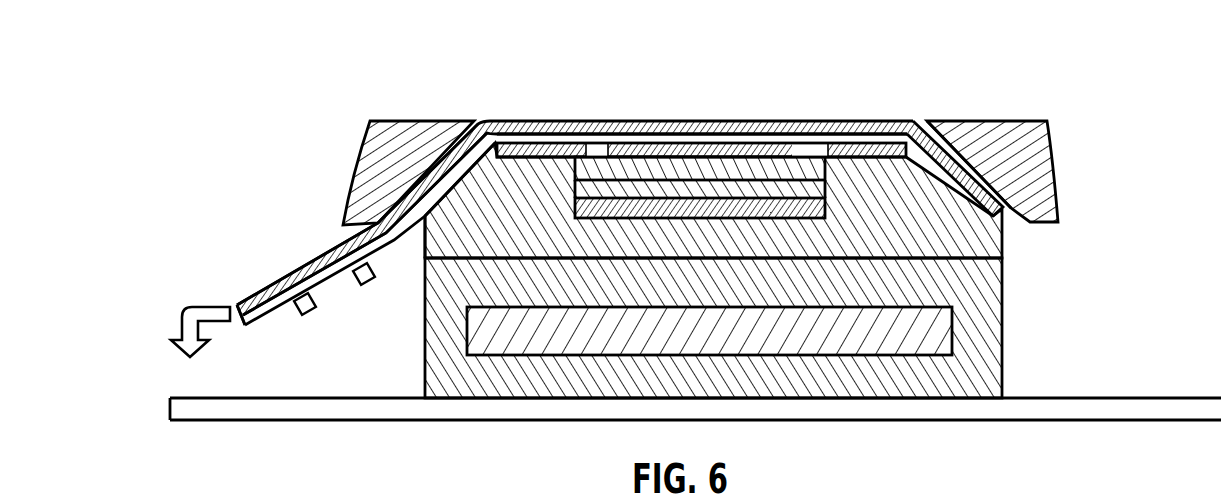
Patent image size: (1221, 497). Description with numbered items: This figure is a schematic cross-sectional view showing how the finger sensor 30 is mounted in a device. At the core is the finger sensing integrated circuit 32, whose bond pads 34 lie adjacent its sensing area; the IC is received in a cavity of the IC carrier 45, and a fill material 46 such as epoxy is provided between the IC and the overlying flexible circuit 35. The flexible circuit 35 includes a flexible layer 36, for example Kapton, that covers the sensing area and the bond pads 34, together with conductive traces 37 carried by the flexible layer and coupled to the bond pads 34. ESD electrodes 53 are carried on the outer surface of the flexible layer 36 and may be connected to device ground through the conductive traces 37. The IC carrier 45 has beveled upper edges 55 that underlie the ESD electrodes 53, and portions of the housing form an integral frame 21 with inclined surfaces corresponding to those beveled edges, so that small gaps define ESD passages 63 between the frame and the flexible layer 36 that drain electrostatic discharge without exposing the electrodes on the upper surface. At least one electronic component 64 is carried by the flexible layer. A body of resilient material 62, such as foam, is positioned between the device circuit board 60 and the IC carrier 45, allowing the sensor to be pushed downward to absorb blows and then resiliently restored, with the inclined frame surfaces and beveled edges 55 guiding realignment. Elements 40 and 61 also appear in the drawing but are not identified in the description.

The finger sensor 30 is at (833, 56).
The integral frame 21 is at (398, 142).
The ESD electrodes 53 is at (438, 205).
The ESD passages 63 is at (484, 124).
The flexible layer 36 is at (551, 122).
The bond pads 34 is at (606, 143).
The finger sensing integrated circuit 32 is at (708, 170).
The flexible circuit 35 is at (729, 115).
The fill material 46 is at (871, 143).
The encapsulant side surface 61 is at (978, 130).
The lead 40 is at (288, 279).
The electronic component 64 is at (322, 316).
The conductive traces 37 is at (383, 260).
The beveled upper edges 55 is at (423, 256).
The IC carrier 45 is at (990, 236).
The body of resilient material 62 is at (1005, 358).
The device circuit board 60 is at (1147, 396).